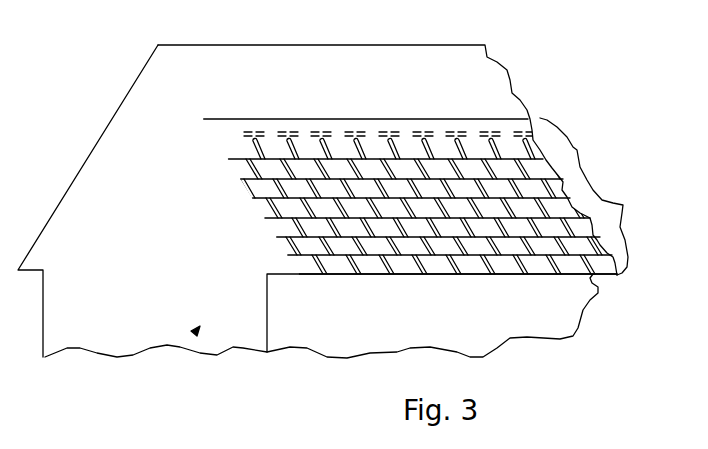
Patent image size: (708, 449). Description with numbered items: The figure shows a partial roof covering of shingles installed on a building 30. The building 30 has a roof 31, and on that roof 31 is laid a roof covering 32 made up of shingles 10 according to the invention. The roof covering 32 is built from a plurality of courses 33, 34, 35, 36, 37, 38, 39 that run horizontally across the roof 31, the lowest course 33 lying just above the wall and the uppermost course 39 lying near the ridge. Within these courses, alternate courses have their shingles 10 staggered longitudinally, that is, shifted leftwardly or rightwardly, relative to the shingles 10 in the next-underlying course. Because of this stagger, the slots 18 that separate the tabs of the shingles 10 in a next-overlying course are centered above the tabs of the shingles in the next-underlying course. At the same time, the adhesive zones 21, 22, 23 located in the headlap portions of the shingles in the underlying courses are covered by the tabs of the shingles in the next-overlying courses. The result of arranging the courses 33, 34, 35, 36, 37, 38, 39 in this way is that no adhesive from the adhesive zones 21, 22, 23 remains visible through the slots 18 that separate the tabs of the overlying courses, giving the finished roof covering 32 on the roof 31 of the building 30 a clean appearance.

The shingles 10 is at (436, 270).
The slots 18 is at (266, 150).
The adhesive zone 21 is at (389, 77).
The adhesive zone 22 is at (389, 134).
The adhesive zone 23 is at (371, 147).
The building 30 is at (196, 333).
The roof 31 is at (502, 91).
The roof covering 32 is at (601, 196).
The course 33 is at (298, 265).
The course 34 is at (281, 243).
The course 35 is at (270, 226).
The course 36 is at (256, 205).
The course 37 is at (246, 190).
The course 38 is at (230, 167).
The course 39 is at (348, 83).